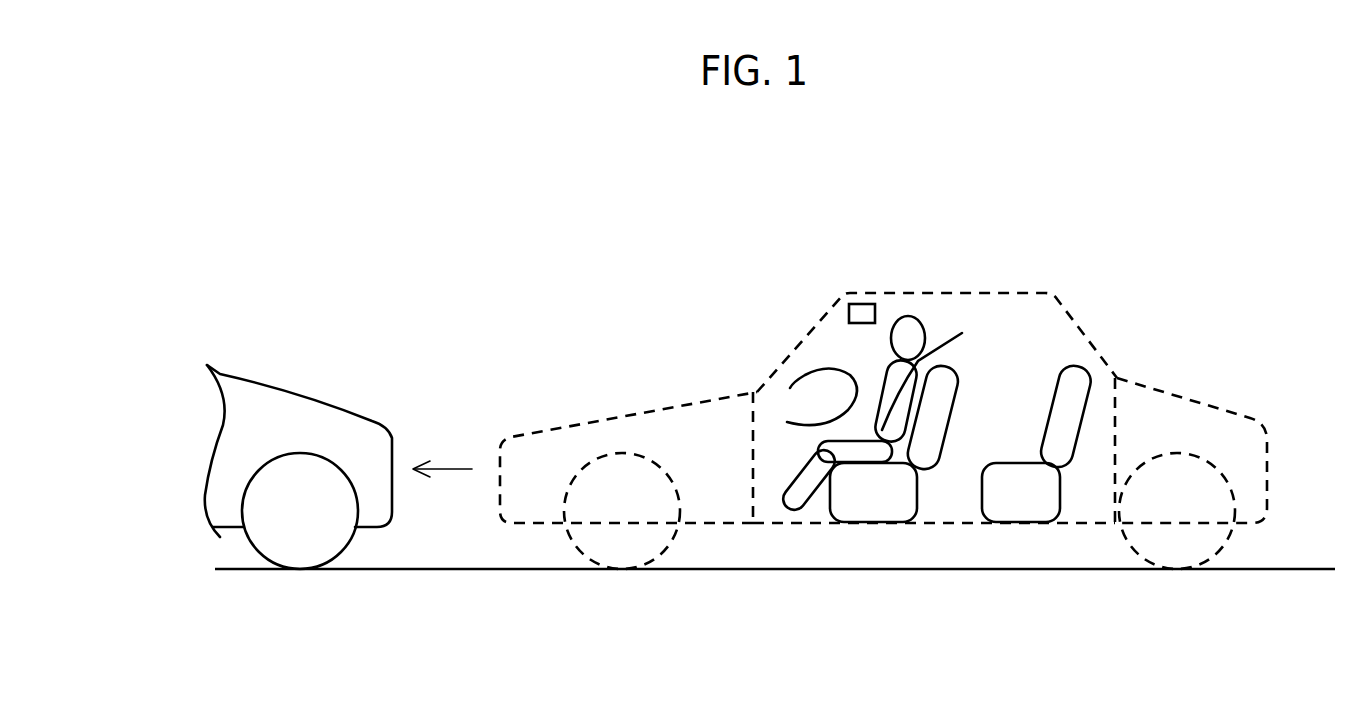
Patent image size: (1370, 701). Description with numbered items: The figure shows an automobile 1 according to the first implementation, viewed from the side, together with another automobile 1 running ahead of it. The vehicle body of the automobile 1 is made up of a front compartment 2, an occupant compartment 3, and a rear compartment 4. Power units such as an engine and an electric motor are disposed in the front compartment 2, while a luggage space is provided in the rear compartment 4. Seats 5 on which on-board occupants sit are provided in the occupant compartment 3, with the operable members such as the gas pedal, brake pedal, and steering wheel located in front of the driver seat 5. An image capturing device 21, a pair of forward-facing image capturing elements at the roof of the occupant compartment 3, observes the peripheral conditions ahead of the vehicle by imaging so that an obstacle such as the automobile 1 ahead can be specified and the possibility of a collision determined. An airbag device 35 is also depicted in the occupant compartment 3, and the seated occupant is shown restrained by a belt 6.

The automobile 1 is at (691, 272).
The front compartment 2 is at (633, 417).
The occupant compartment 3 is at (993, 302).
The rear compartment 4 is at (1172, 407).
The seat 5 is at (883, 504).
The seat belt 6 is at (948, 339).
The image capturing device 21 is at (860, 315).
The airbag device 35 is at (808, 389).